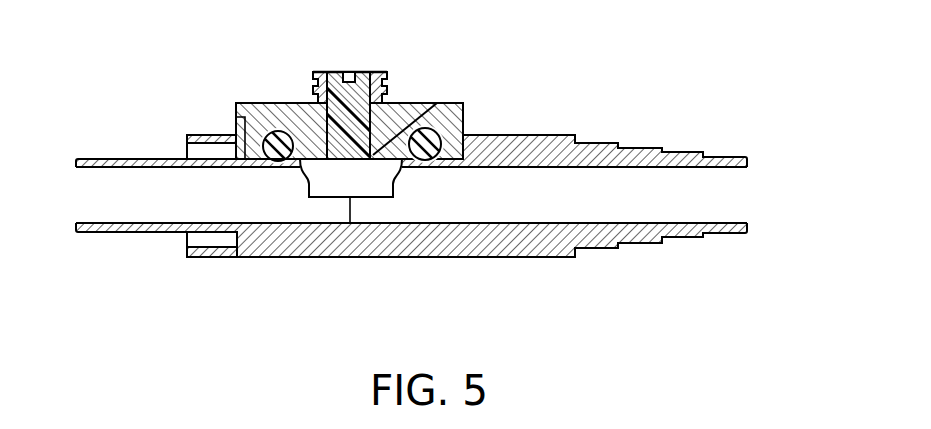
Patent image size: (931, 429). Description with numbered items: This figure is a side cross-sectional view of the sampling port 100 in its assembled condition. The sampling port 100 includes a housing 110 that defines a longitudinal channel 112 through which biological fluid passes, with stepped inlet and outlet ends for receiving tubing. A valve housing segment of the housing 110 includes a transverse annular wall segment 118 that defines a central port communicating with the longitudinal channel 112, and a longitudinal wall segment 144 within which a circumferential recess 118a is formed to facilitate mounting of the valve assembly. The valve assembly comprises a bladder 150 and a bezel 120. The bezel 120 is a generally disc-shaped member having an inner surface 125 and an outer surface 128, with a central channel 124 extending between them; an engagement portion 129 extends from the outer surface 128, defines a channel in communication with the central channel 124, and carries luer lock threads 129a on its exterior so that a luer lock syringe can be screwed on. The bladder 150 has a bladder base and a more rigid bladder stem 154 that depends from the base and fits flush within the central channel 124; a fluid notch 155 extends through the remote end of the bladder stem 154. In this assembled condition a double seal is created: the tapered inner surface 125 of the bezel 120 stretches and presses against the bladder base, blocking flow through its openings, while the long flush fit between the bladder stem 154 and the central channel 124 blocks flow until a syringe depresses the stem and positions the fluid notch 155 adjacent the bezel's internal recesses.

The sampling port 100 is at (733, 75).
The housing 110 is at (558, 135).
The longitudinal channel 112 is at (741, 185).
The transverse annular wall segment 118 is at (466, 116).
The circumferential recess 118a is at (265, 163).
The bezel 120 is at (408, 103).
The central channel 124 is at (306, 83).
The inner surface 125 is at (437, 103).
The outer surface 128 is at (237, 104).
The engagement portion 129 is at (312, 94).
The luer lock threads 129a is at (312, 96).
The longitudinal wall segment 144 is at (443, 161).
The bladder 150 is at (437, 131).
The bladder stem 154 is at (321, 73).
The fluid notch 155 is at (345, 72).